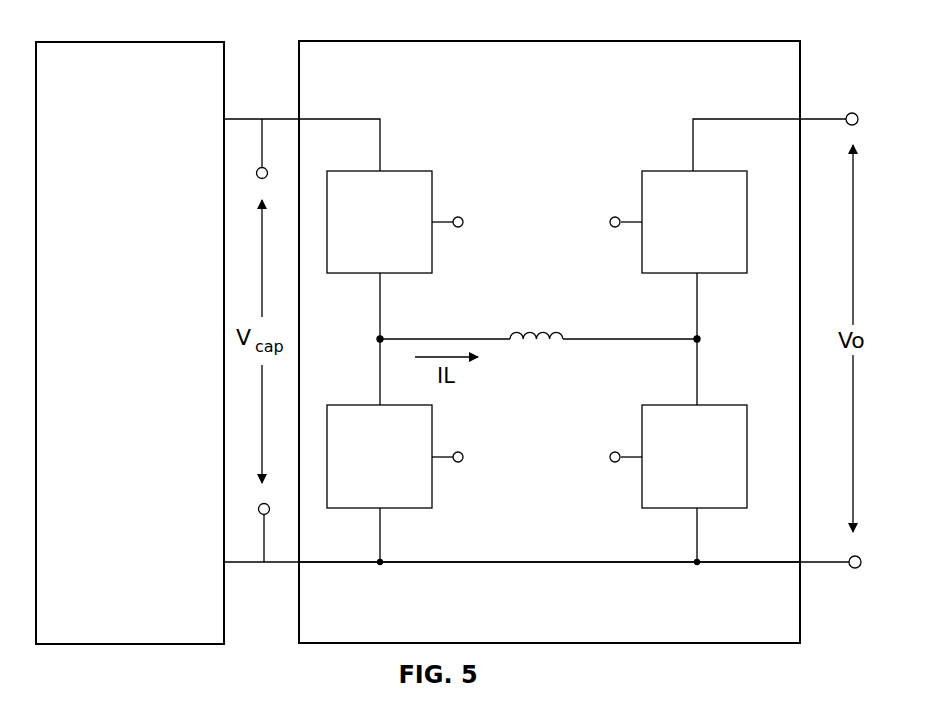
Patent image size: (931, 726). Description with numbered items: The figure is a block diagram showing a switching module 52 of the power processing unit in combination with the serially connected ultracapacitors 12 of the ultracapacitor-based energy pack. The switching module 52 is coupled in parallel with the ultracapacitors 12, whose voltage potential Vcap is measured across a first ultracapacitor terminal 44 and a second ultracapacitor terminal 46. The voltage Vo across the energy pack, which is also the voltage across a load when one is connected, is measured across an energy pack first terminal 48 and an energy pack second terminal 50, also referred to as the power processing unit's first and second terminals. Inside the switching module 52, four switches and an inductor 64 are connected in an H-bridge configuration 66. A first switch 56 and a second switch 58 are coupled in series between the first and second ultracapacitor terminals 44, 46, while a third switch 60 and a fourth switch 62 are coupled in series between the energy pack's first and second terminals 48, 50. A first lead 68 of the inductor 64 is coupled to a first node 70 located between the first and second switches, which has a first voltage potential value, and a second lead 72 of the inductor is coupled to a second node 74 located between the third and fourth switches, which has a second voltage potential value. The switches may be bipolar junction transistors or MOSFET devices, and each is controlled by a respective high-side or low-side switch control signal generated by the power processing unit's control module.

The ultracapacitors 12 is at (83, 41).
The switching module 52 is at (347, 40).
The first ultracapacitor terminal 44 is at (256, 173).
The second ultracapacitor terminal 46 is at (258, 509).
The energy pack first terminal 48 is at (853, 113).
The energy pack second terminal 50 is at (855, 568).
The first switch SW1 56 is at (375, 170).
The second switch SW2 58 is at (377, 404).
The third switch SW3 60 is at (691, 170).
The fourth switch SW4 62 is at (692, 404).
The inductor 64 is at (525, 327).
The H-bridge configuration 66 is at (540, 552).
The first lead 68 is at (448, 338).
The first node 70 is at (378, 338).
The second lead 72 is at (628, 338).
The second node 74 is at (699, 338).